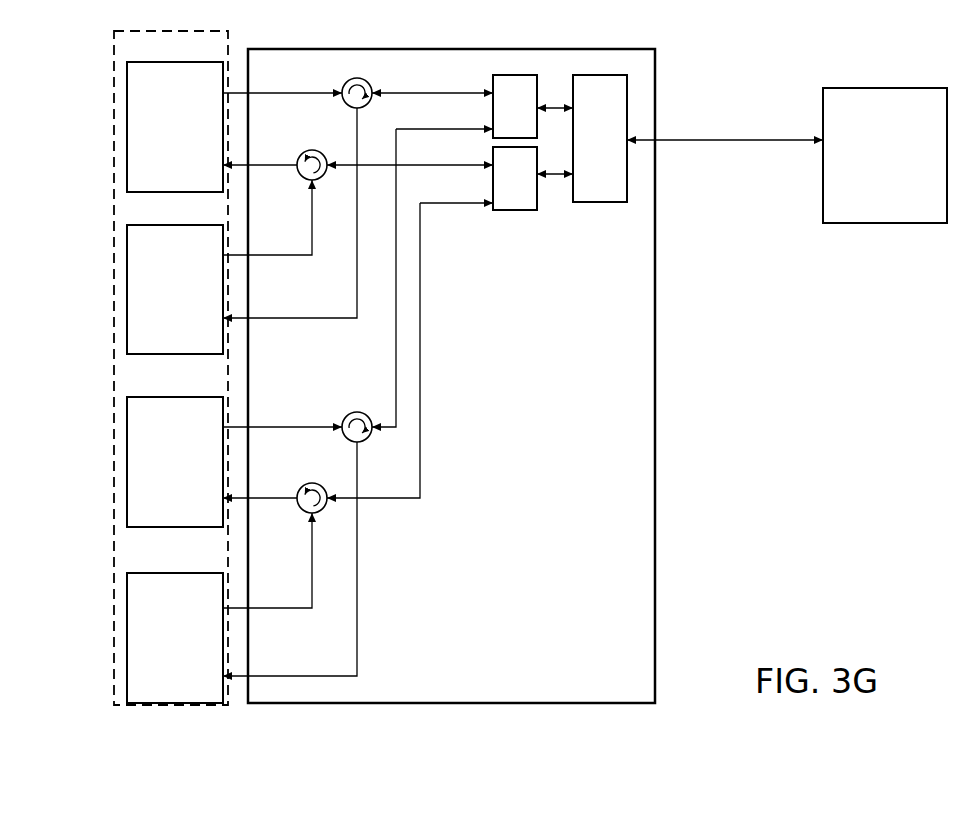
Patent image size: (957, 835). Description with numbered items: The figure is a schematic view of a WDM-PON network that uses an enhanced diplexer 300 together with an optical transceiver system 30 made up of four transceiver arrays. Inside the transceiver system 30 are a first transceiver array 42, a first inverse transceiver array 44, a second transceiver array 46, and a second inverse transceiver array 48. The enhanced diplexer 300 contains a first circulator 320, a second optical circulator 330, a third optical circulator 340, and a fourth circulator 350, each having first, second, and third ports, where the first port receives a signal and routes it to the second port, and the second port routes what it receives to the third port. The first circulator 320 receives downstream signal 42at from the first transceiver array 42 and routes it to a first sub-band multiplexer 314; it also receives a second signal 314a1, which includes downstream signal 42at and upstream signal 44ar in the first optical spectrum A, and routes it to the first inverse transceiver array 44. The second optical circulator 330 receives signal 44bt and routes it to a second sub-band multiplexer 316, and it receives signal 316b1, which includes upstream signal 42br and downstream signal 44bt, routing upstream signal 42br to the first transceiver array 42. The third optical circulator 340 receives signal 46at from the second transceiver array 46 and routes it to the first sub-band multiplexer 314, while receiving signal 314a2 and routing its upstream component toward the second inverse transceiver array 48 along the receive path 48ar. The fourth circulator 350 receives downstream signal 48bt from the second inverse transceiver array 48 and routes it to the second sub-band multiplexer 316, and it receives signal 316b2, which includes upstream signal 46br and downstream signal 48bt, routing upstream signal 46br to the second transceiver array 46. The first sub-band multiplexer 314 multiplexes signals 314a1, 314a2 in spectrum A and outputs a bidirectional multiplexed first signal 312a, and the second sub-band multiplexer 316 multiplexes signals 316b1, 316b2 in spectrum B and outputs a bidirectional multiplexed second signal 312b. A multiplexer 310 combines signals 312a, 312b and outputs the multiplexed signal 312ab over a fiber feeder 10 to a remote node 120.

The transceiver 30 is at (170, 31).
The first transceiver array 42 is at (147, 62).
The first inverse transceiver array 44 is at (157, 225).
The second transceiver array 46 is at (157, 397).
The second inverse transceiver array 48 is at (157, 573).
The enhanced diplexer 300 is at (594, 36).
The first circulator 320 is at (350, 78).
The second optical circulator 330 is at (316, 150).
The third optical circulator 340 is at (350, 412).
The fourth circulator 350 is at (316, 483).
The downstream signal 42at is at (293, 91).
The upstream signal 42br is at (277, 163).
The first signal 44bt is at (293, 257).
The upstream signal 44ar is at (326, 320).
The first signal 46at is at (277, 429).
The upstream signal 46br is at (273, 500).
The downstream signal 48bt is at (276, 610).
The receive fiber to array 48 port A 48ar is at (359, 592).
The first sub-band multiplexer 314 is at (493, 75).
The second sub-band multiplexer 316 is at (512, 210).
The multiplexer 310 is at (590, 202).
The second signal 314a1 is at (428, 91).
The signal 314a2 is at (428, 127).
The signal 316b1 is at (417, 167).
The signal 316b2 is at (450, 205).
The bidirectional multiplexed first signal 312a is at (555, 106).
The bidirectional multiplexed second signal 312b is at (552, 176).
The multiplexed signal 312ab is at (749, 142).
The fiber feeder 10 is at (725, 144).
The remote node 120 is at (882, 88).